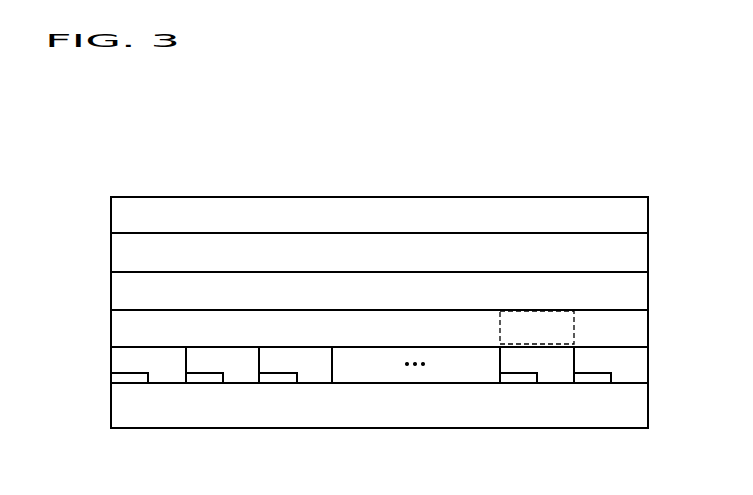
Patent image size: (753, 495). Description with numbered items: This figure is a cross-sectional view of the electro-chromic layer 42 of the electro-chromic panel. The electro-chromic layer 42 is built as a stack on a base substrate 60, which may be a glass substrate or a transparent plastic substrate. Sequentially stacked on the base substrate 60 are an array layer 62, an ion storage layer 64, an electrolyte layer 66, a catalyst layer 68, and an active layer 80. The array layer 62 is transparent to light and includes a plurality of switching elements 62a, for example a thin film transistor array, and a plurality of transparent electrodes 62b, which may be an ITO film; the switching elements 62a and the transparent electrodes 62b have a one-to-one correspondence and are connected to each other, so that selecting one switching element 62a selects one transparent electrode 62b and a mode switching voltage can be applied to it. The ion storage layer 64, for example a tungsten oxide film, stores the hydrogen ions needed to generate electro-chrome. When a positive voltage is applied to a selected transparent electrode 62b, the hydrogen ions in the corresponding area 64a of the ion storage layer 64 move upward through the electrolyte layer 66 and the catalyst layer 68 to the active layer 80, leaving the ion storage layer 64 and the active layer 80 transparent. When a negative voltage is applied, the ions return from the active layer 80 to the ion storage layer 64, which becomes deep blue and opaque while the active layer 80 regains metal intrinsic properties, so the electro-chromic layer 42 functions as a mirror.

The electro-chromic layer 42 is at (97, 182).
The active layer 80 is at (636, 218).
The catalyst layer 68 is at (122, 252).
The electrolyte layer 66 is at (636, 292).
The ion storage layer 64 is at (122, 327).
The area of the ion storage layer 64a is at (574, 333).
The array layer 62 is at (105, 347).
The switching elements 62a is at (595, 378).
The transparent electrodes 62b is at (558, 367).
The base substrate 60 is at (353, 413).